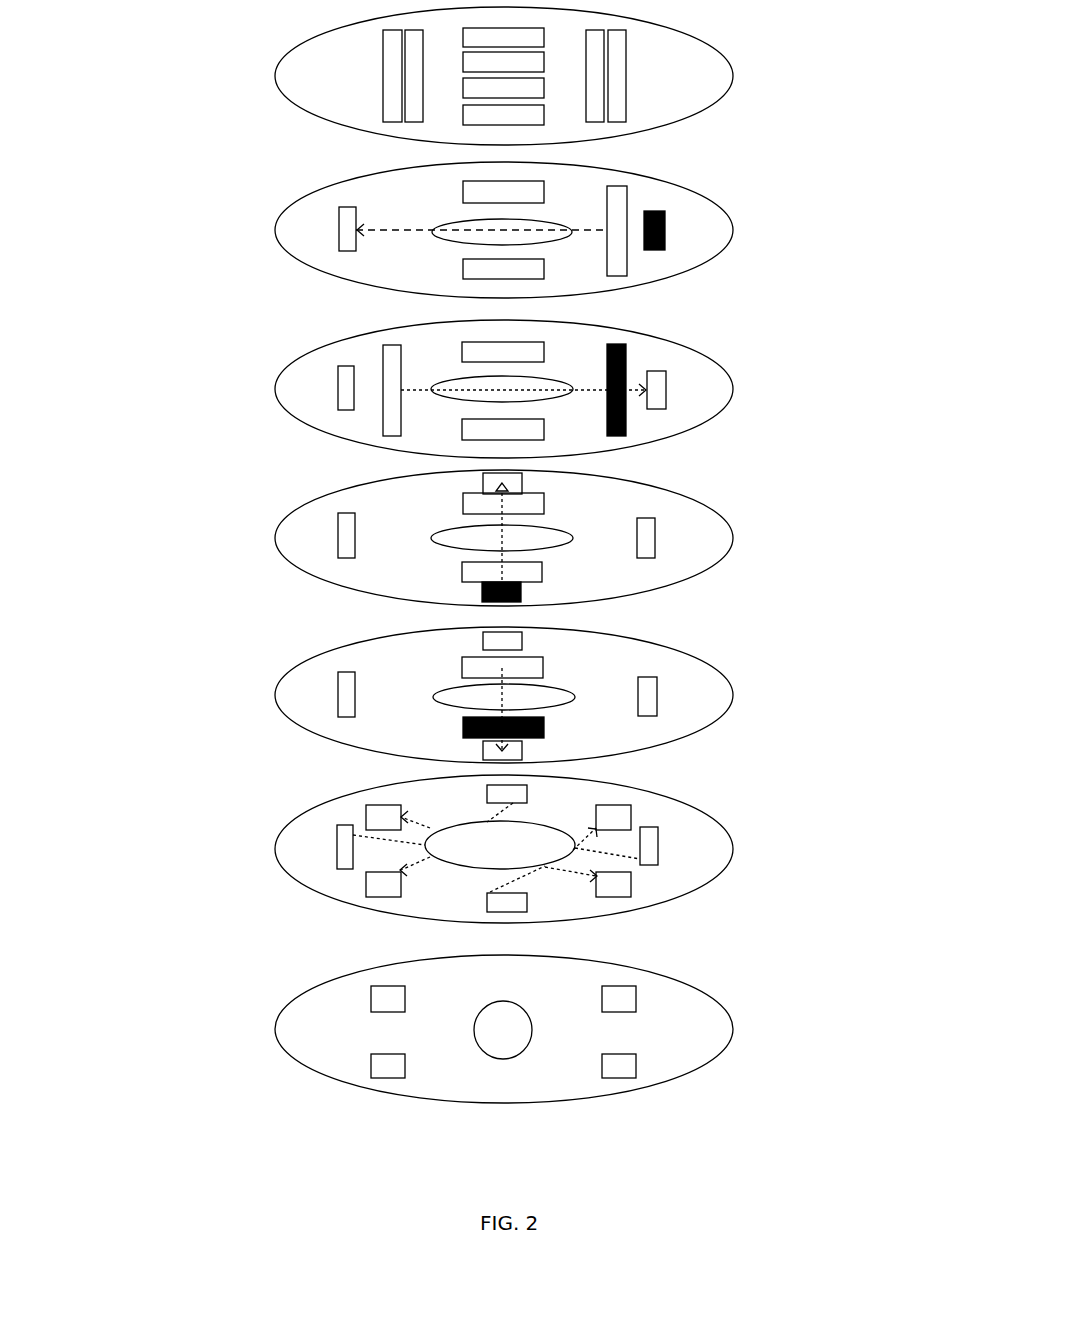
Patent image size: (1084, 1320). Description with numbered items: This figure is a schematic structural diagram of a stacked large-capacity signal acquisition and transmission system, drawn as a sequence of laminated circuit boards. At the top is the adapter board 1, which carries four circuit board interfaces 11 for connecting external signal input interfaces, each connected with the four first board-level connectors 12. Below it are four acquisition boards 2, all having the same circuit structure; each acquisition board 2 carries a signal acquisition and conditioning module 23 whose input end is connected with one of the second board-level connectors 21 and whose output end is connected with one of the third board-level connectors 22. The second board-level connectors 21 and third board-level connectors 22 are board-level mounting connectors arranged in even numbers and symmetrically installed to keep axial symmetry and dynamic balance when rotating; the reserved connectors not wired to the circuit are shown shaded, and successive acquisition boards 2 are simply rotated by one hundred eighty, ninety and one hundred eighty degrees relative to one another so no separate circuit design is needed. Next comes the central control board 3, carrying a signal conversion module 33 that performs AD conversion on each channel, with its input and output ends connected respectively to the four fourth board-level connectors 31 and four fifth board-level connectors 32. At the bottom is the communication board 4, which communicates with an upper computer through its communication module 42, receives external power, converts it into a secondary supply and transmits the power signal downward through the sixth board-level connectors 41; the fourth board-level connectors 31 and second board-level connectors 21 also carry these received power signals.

The adapter board 1 is at (497, 112).
The circuit board interfaces 11 is at (415, 62).
The first board-level connectors 12 is at (387, 108).
The acquisition boards 2 is at (498, 462).
The second board-level connectors 21 is at (627, 253).
The third board-level connectors 22 is at (339, 229).
The signal acquisition and conditioning module 23 is at (530, 230).
The central control board 3 is at (520, 861).
The fourth board-level connectors 31 is at (487, 902).
The fifth board-level connectors 32 is at (366, 817).
The signal conversion module 33 is at (545, 843).
The communication board 4 is at (551, 1061).
The sixth board-level connectors 41 is at (388, 998).
The communication module 42 is at (503, 1029).